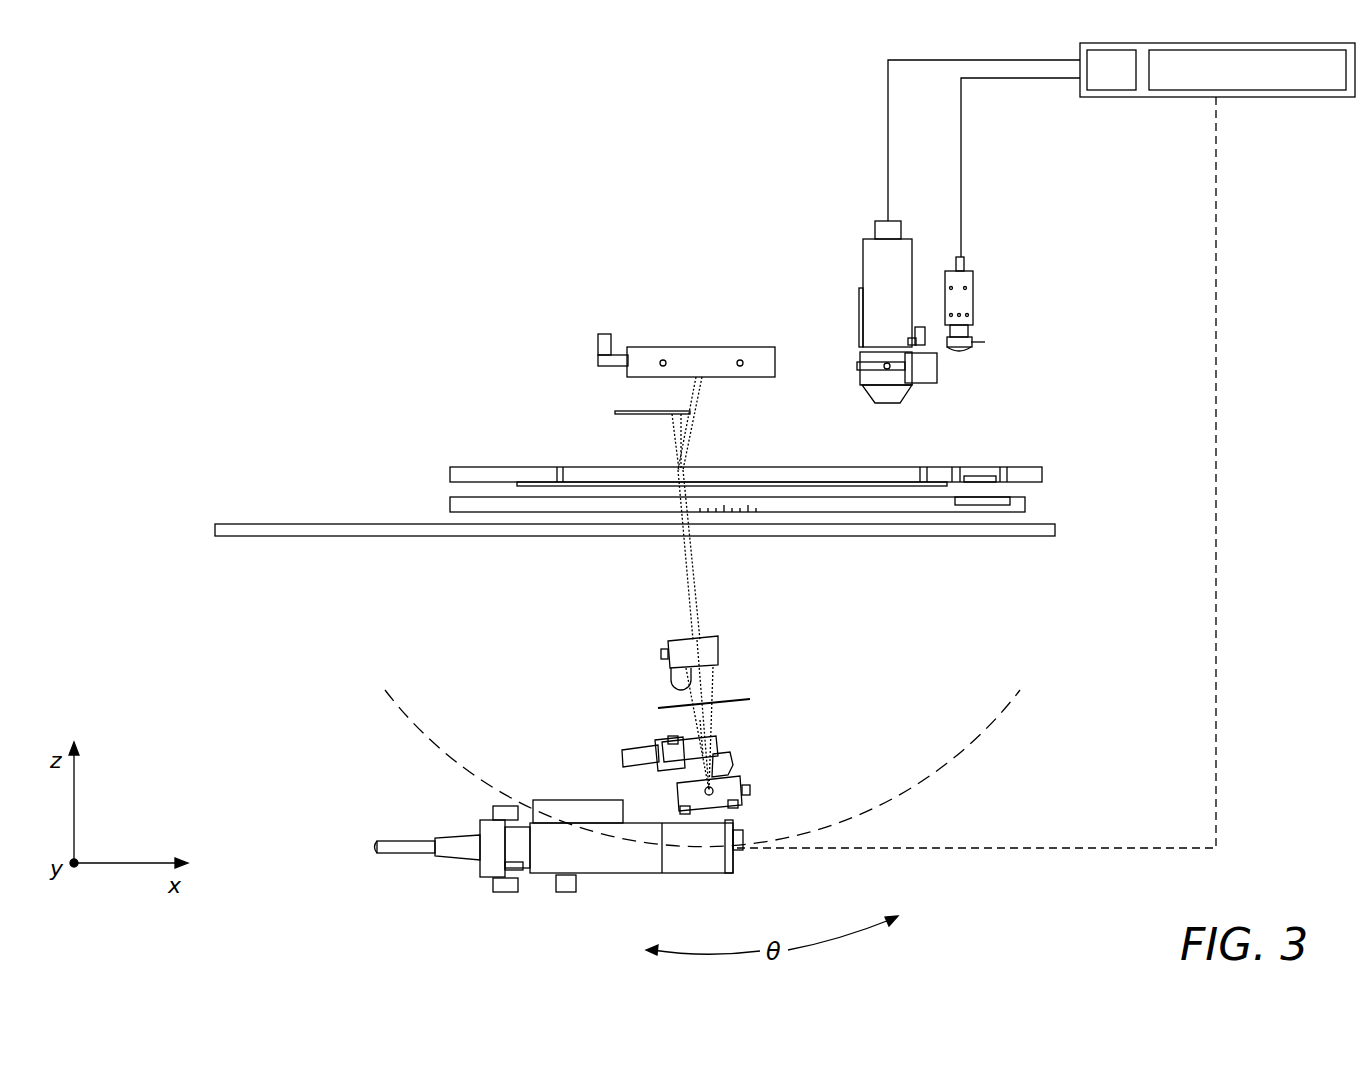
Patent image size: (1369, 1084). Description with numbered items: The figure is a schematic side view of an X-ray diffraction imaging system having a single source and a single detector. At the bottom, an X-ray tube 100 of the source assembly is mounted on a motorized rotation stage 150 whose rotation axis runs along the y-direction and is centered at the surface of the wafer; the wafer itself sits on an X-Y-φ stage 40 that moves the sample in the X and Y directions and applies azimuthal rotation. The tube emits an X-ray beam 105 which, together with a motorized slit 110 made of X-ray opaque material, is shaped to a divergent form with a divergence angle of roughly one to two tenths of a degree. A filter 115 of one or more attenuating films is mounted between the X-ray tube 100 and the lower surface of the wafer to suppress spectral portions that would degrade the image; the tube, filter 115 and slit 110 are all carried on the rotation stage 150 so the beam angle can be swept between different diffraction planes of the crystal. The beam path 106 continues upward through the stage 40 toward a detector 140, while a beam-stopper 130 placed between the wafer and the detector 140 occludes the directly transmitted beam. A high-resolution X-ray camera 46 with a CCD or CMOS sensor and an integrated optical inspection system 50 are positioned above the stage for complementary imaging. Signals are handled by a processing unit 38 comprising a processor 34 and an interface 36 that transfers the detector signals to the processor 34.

The processor 34 is at (1290, 97).
The interface 36 is at (1112, 97).
The processing unit 38 is at (1335, 97).
The X-Y-φ stage 40 is at (990, 445).
The X-ray camera 46 is at (885, 290).
The integrated optical inspection system 50 is at (975, 287).
The X-ray tube 100 is at (548, 843).
The X-ray beam 105 is at (718, 717).
The light beam 106 is at (690, 598).
The slit 110 is at (718, 637).
The filter 115 is at (660, 707).
The beam-stopper 130 is at (642, 413).
The detector 140 is at (688, 360).
The motorized rotation stage 150 is at (940, 775).